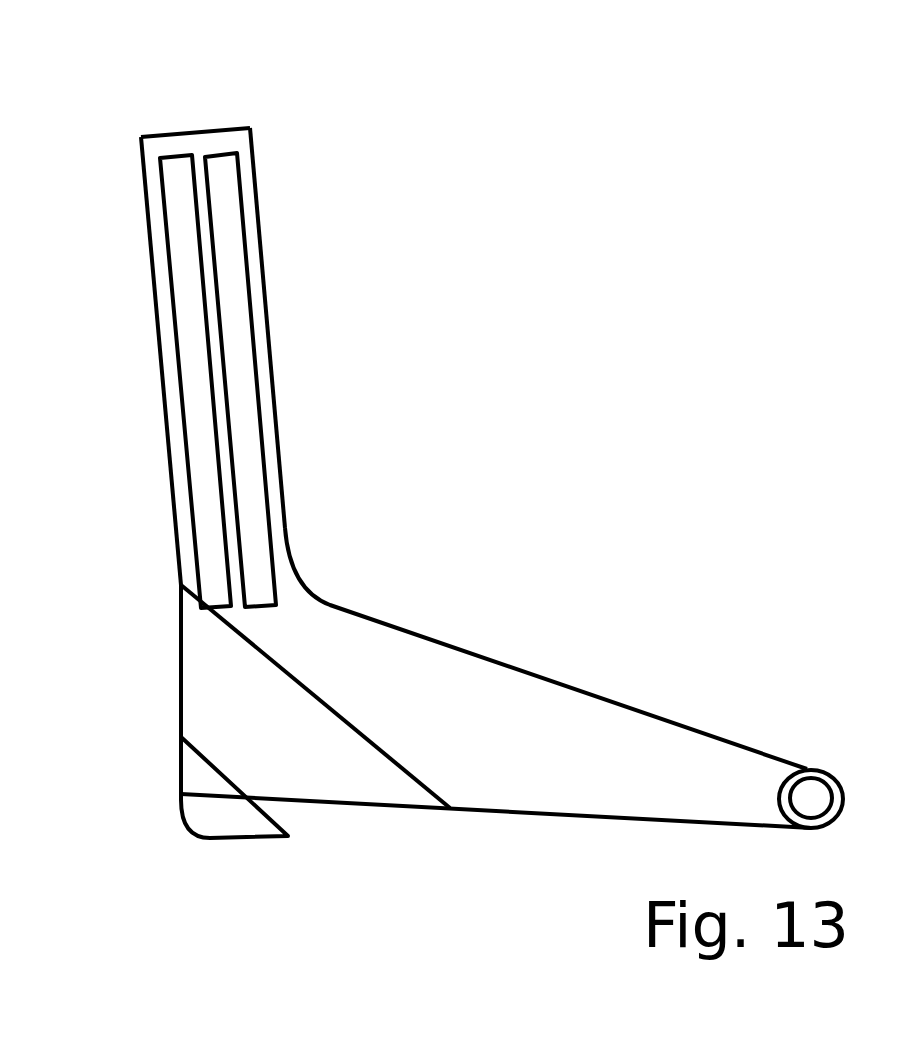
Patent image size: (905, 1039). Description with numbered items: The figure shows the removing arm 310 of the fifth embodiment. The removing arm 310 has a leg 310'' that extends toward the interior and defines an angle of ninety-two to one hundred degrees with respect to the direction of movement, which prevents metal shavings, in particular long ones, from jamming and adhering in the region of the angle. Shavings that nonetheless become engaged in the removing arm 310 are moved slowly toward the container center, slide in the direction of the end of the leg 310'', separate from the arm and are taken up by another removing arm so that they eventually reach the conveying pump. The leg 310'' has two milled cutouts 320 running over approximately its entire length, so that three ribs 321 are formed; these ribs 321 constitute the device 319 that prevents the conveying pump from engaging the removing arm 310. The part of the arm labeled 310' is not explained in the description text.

The removing arm 310 is at (437, 435).
The base part of support stand 310' is at (564, 678).
The leg 310'' is at (259, 320).
The device 319 is at (332, 354).
The milled cutouts 320 is at (180, 252).
The ribs 321 is at (172, 382).